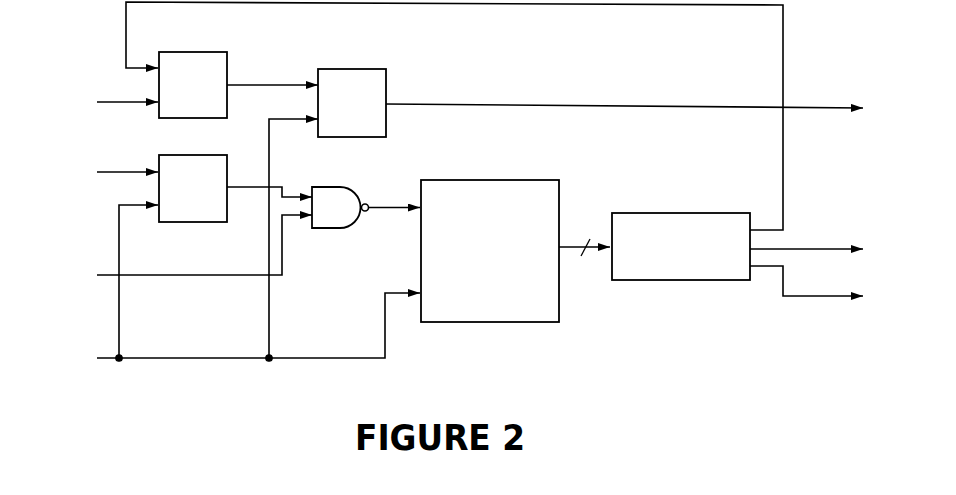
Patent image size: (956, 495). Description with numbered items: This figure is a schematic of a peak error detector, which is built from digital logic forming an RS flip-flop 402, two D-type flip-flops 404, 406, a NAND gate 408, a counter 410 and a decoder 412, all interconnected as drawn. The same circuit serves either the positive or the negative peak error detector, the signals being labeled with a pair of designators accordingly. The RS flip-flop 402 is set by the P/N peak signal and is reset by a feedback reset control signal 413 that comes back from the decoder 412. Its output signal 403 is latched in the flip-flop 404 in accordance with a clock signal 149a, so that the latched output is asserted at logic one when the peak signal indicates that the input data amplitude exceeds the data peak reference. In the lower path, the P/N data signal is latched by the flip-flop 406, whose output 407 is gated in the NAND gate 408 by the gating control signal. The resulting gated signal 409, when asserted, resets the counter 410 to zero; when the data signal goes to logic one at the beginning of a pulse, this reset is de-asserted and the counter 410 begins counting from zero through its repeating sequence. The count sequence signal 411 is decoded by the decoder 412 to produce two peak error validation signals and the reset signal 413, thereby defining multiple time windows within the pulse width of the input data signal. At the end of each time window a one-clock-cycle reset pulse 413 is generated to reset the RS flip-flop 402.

The RS flip-flop 402 is at (212, 52).
The output signal 403 is at (263, 83).
The D-type flip-flop 404 is at (369, 68).
The D-type flip-flop 406 is at (221, 225).
The output 407 is at (279, 186).
The NAND gate 408 is at (341, 228).
The gated signal 409 is at (376, 205).
The counter 410 is at (483, 180).
The count sequence signal 411 is at (572, 245).
The decoder 412 is at (671, 213).
The feedback reset control signal 413 is at (576, 5).
The clock signal 149a is at (155, 360).